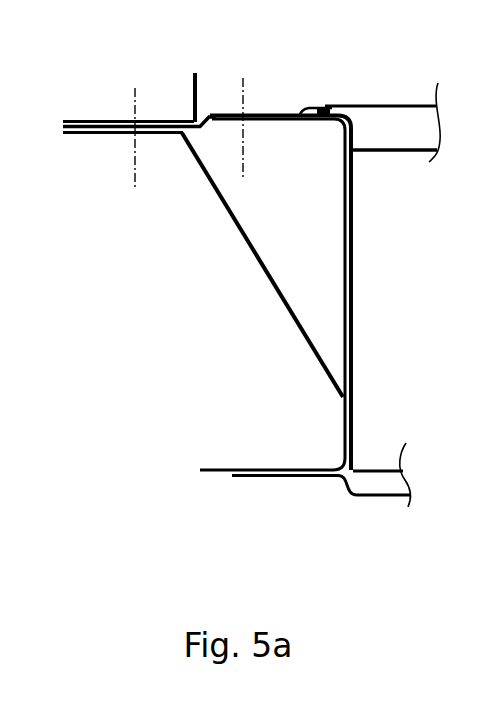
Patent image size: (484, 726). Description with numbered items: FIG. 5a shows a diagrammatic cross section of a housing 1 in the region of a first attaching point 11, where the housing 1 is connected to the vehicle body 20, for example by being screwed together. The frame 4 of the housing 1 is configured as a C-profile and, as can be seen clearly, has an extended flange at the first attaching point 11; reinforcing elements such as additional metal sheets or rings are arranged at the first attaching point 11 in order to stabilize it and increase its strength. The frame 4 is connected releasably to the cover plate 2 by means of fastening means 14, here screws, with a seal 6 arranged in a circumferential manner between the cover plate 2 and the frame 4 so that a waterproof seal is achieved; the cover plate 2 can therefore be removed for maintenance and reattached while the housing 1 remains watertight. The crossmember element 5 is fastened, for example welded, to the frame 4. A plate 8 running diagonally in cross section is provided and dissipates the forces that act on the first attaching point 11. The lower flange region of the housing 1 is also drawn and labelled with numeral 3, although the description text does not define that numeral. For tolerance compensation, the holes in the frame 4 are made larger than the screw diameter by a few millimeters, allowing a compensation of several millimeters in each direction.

The housing 1 is at (181, 323).
The cover plate 2 is at (395, 106).
The bottom flange 3 is at (370, 498).
The frame 4 is at (353, 305).
The crossmember element 5 is at (392, 151).
The seal 6 is at (322, 106).
The plate 8 is at (290, 316).
The first attaching point 11 is at (134, 132).
The fastening means 14 is at (243, 102).
The vehicle body 20 is at (195, 103).